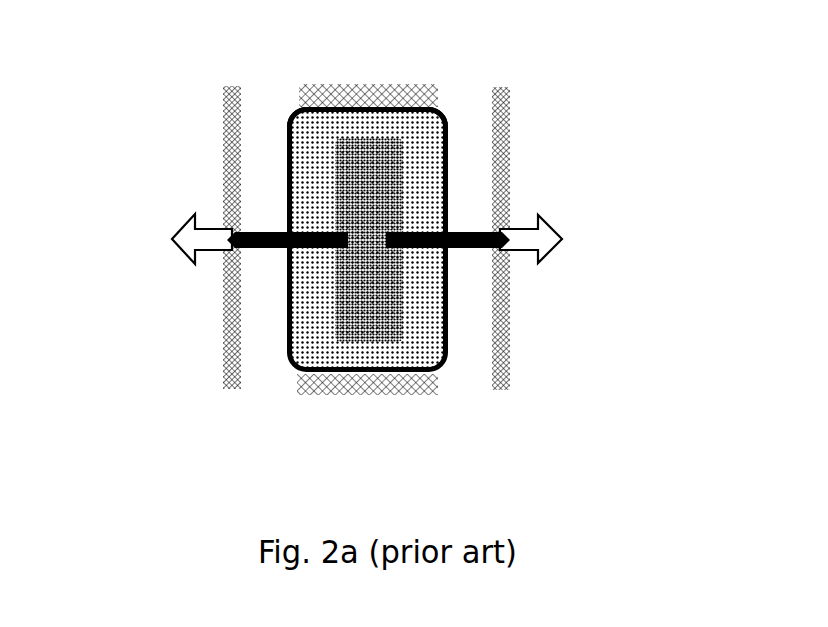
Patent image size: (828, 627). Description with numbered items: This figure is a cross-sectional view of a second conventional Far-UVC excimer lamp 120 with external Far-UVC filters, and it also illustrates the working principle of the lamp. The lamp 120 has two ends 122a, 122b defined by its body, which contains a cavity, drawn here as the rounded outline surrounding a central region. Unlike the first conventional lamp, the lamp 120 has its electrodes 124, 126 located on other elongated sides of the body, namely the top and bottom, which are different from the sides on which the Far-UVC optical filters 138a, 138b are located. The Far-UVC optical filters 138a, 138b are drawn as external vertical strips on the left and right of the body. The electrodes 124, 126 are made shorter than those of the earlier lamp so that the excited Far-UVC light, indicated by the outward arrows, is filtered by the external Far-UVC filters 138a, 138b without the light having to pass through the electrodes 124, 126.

The Far-UVC excimer lamp 120 is at (271, 409).
The first end 122a is at (278, 197).
The second end 122b is at (451, 202).
The first electrode 124 is at (383, 97).
The second electrode 126 is at (393, 382).
The first Far-UVC optical filter 138a is at (225, 348).
The second Far-UVC optical filter 138b is at (500, 172).